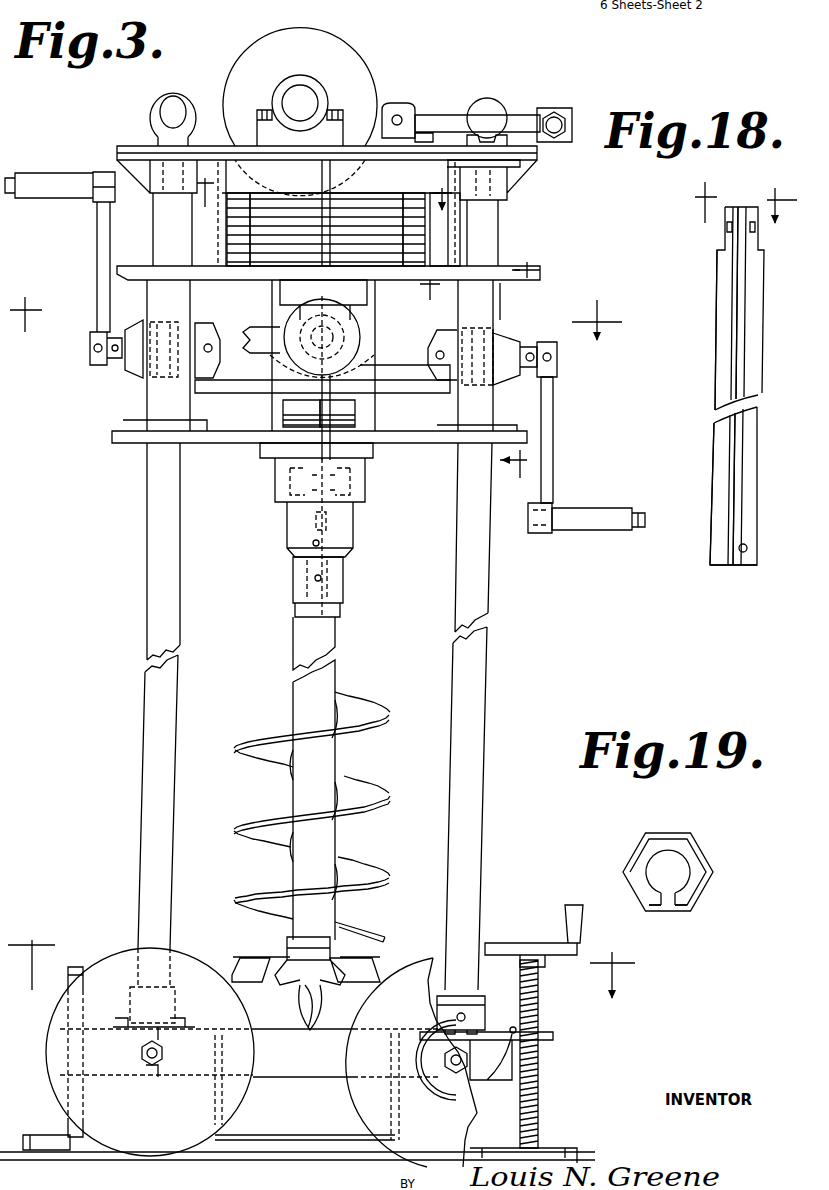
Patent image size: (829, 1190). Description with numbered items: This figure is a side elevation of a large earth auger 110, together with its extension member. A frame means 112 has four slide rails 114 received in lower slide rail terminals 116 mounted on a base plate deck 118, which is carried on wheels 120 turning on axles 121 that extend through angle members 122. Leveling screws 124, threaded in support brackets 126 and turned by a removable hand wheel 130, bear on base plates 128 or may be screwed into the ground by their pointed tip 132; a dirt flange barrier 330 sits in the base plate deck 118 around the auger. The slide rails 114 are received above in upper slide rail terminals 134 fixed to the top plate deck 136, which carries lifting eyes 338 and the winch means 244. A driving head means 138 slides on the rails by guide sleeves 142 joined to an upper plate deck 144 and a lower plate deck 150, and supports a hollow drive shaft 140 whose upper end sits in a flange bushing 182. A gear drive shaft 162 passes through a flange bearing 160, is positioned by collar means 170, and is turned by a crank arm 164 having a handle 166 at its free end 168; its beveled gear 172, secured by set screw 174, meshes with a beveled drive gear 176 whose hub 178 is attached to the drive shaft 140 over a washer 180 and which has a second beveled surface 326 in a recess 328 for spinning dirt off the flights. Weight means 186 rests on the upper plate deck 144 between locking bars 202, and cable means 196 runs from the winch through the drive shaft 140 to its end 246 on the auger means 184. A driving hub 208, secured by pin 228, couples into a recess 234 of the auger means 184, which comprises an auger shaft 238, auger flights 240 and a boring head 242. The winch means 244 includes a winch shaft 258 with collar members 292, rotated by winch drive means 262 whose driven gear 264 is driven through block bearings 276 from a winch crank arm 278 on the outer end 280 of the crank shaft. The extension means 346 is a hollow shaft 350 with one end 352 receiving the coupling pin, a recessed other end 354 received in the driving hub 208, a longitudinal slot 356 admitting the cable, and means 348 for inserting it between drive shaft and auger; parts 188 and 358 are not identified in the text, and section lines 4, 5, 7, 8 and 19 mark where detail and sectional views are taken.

In FIG. 3, the large earth auger 110 is at (130, 560).
In FIG. 3, the frame means 112 is at (518, 230).
In FIG. 3, the slide rails 114 is at (480, 780).
In FIG. 3, the lower slide rail terminals 116 is at (477, 1015).
In FIG. 3, the base plate deck 118 is at (497, 1080).
In FIG. 3, the wheels 120 is at (407, 1140).
In FIG. 3, the axles 121 is at (163, 1062).
In FIG. 3, the angle members 122 is at (310, 1078).
In FIG. 3, the leveling screws 124 is at (76, 967).
In FIG. 3, the support brackets 126 is at (548, 1042).
In FIG. 3, the base plate 128 is at (47, 1153).
In FIG. 3, the removable hand wheel 130 is at (508, 945).
In FIG. 3, the pointed tip 132 is at (90, 1152).
In FIG. 3, the upper slide rail terminals 134 is at (515, 180).
In FIG. 3, the top plate deck 136 is at (545, 158).
In FIG. 3, the driving head means 138 is at (533, 322).
In FIG. 3, the drive shaft 140 is at (287, 317).
In FIG. 3, the guide sleeves 142 is at (498, 310).
In FIG. 3, the upper plate deck 144 is at (512, 262).
In FIG. 3, the lower plate deck 150 is at (418, 443).
In FIG. 3, the flange bearing 160 is at (136, 378).
In FIG. 3, the gear drive shaft 162 is at (558, 362).
In FIG. 3, the crank arm 164 is at (554, 410).
In FIG. 3, the handle 166 is at (587, 517).
In FIG. 3, the free end of crank arm 168 is at (542, 533).
In FIG. 3, the collar means 170 is at (527, 380).
In FIG. 3, the beveled gear 172 is at (442, 335).
In FIG. 3, the set screw 174 is at (436, 355).
In FIG. 3, the beveled drive gear 176 is at (410, 396).
In FIG. 3, the hub 178 is at (362, 412).
In FIG. 3, the washer 180 is at (262, 430).
In FIG. 3, the flange bushing 182 is at (370, 293).
In FIG. 3, the auger means 184 is at (407, 677).
In FIG. 3, the weight means 186 is at (433, 245).
In FIG. 3, the housing support 188 is at (443, 283).
In FIG. 3, the cable means 196 is at (330, 178).
In FIG. 3, the locking bars 202 is at (226, 222).
In FIG. 3, the driving hub 208 is at (353, 528).
In FIG. 3, the pin 228 is at (303, 553).
In FIG. 3, the recess 234 is at (330, 578).
In FIG. 3, the auger shaft 238 is at (328, 838).
In FIG. 3, the auger flights 240 is at (377, 872).
In FIG. 3, the boring head 242 is at (322, 994).
In FIG. 3, the winch means 244 is at (383, 80).
In FIG. 3, the end of cable means 246 is at (318, 520).
In FIG. 3, the winch shaft 258 is at (314, 94).
In FIG. 3, the winch drive means 262 is at (512, 97).
In FIG. 3, the driven gear 264 is at (347, 53).
In FIG. 3, the block bearings 276 is at (412, 152).
In FIG. 3, the winch crank arm 278 is at (540, 105).
In FIG. 3, the outer end of winch crank shaft 280 is at (402, 112).
In FIG. 3, the collar members 292 is at (290, 165).
In FIG. 3, the second beveled surface 326 is at (375, 415).
In FIG. 3, the recess 328 is at (301, 413).
In FIG. 3, the dirt flange barrier 330 is at (250, 1130).
In FIG. 3, the lifting eyes 338 is at (153, 120).
In FIG. 18, the extension means 346 is at (713, 337).
In FIG. 19, the extension means 346 is at (703, 810).
In FIG. 18, the means for placing extension 348 is at (727, 570).
In FIG. 19, the means for placing extension 348 is at (664, 920).
In FIG. 18, the hollow shaft 350 is at (755, 328).
In FIG. 19, the hollow shaft 350 is at (703, 852).
In FIG. 18, the end of hollow shaft 352 is at (727, 570).
In FIG. 18, the recessed end of extension shaft 354 is at (723, 225).
In FIG. 18, the longitudinal slot 356 is at (732, 523).
In FIG. 19, the longitudinal slot 356 is at (668, 905).
In FIG. 18, the hole 358 is at (745, 552).
In FIG. 3, the section line 4 is at (321, 971).
In FIG. 3, the section line 5 is at (534, 374).
In FIG. 3, the section line 7 is at (317, 326).
In FIG. 3, the section line 8 is at (324, 185).
In FIG. 18, the section lines 19 is at (746, 200).